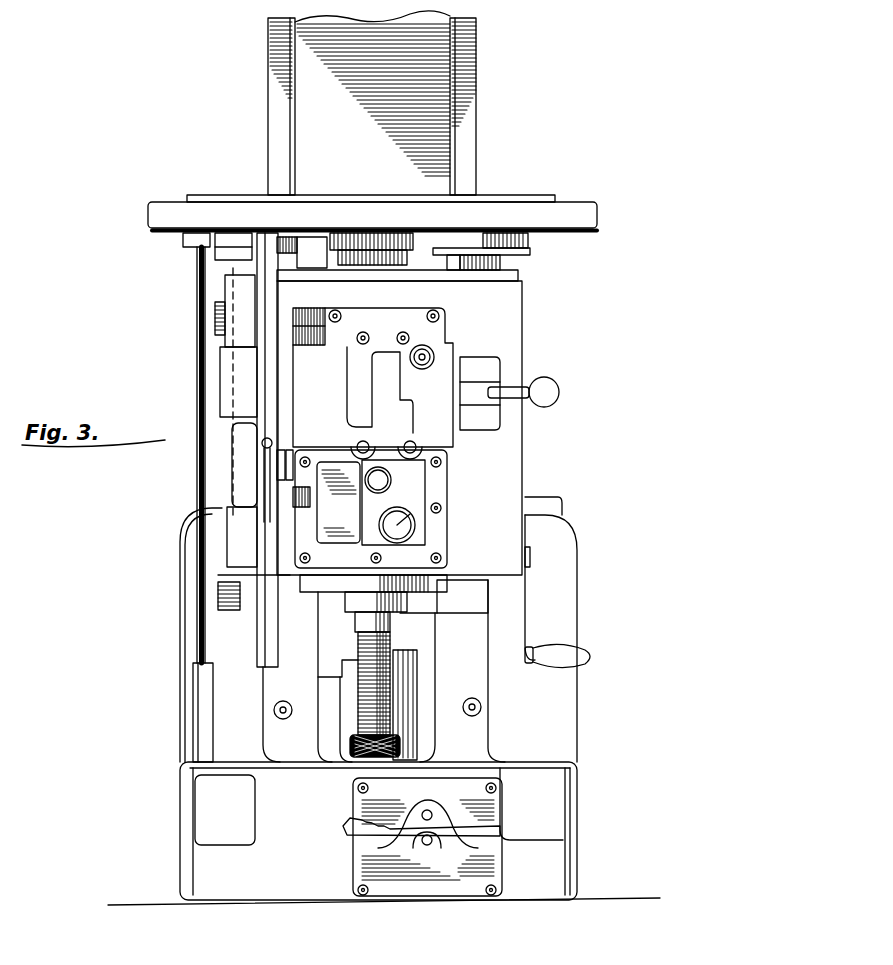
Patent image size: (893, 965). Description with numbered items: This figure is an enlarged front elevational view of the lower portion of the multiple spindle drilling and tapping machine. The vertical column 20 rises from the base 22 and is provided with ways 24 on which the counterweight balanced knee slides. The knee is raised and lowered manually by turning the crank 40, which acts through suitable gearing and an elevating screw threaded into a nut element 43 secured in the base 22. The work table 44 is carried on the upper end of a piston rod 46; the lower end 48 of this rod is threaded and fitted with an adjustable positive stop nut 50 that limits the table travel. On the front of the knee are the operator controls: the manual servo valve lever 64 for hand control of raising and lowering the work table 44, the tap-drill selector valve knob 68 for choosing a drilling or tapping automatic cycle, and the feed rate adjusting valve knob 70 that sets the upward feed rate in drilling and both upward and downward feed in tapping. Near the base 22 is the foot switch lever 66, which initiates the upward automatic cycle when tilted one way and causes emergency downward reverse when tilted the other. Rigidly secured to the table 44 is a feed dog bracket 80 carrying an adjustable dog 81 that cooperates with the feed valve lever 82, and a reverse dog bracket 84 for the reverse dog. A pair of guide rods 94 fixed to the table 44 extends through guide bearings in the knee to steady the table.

The vertical column 20 is at (427, 92).
The base 22 is at (228, 892).
The ways 24 is at (275, 160).
The crank 40 is at (527, 628).
The nut element 43 is at (405, 663).
The work table 44 is at (580, 213).
The piston rod 46 is at (388, 232).
The lower end of the piston rod 48 is at (393, 703).
The adjustable positive stop nut 50 is at (352, 745).
The manual servo valve lever 64 is at (515, 385).
The foot switch lever 66 is at (353, 852).
The tap-drill selector valve knob 68 is at (392, 480).
The feed rate adjusting valve knob 70 is at (425, 505).
The feed dog bracket 80 is at (265, 405).
The dog 81 is at (200, 532).
The feed valve lever 82 is at (287, 477).
The reverse dog bracket 84 is at (220, 284).
The guide rods 94 is at (235, 265).